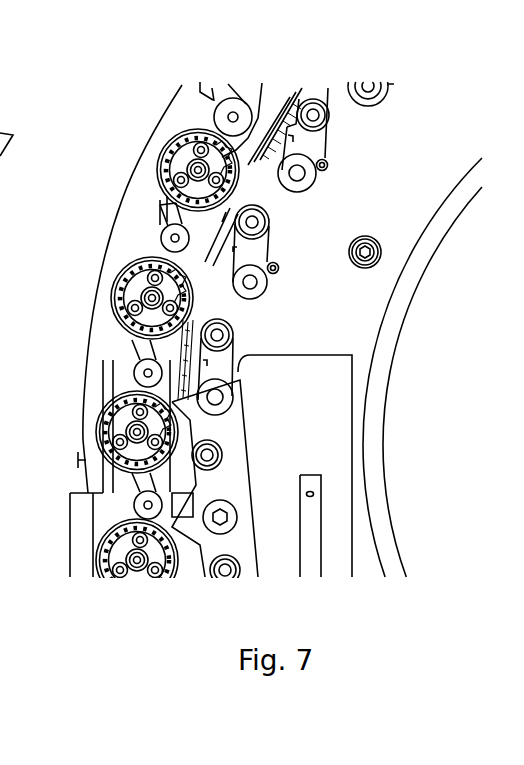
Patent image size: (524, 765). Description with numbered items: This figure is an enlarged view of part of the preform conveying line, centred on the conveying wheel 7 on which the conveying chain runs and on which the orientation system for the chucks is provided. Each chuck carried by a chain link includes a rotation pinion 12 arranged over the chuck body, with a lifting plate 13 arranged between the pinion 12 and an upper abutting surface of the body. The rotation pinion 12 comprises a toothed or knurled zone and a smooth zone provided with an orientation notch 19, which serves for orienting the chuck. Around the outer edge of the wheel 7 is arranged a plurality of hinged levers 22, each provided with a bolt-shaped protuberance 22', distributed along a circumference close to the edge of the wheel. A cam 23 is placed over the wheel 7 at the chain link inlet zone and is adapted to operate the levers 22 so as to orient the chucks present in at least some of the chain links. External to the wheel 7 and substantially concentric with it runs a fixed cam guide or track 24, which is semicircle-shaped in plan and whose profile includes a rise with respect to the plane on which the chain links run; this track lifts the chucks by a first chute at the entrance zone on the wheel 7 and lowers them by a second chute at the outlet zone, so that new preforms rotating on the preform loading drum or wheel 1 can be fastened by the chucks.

The preform loading drum or wheel 1 is at (0, 126).
The conveying wheel 7 is at (325, 321).
The rotation pinion 12 is at (121, 268).
The lifting plate 13 is at (112, 288).
The orientation notch 19 is at (152, 258).
The lever 22 is at (316, 237).
The protuberance 22' is at (225, 121).
The cam 23 is at (323, 437).
The fixed cam guide or track 24 is at (90, 383).